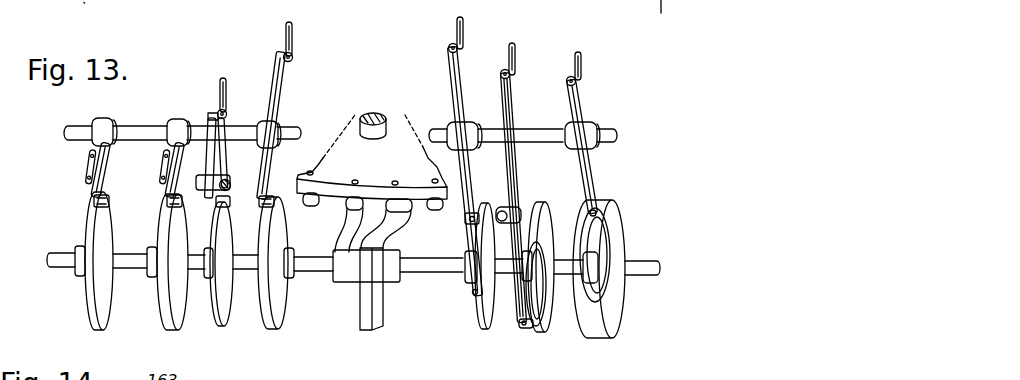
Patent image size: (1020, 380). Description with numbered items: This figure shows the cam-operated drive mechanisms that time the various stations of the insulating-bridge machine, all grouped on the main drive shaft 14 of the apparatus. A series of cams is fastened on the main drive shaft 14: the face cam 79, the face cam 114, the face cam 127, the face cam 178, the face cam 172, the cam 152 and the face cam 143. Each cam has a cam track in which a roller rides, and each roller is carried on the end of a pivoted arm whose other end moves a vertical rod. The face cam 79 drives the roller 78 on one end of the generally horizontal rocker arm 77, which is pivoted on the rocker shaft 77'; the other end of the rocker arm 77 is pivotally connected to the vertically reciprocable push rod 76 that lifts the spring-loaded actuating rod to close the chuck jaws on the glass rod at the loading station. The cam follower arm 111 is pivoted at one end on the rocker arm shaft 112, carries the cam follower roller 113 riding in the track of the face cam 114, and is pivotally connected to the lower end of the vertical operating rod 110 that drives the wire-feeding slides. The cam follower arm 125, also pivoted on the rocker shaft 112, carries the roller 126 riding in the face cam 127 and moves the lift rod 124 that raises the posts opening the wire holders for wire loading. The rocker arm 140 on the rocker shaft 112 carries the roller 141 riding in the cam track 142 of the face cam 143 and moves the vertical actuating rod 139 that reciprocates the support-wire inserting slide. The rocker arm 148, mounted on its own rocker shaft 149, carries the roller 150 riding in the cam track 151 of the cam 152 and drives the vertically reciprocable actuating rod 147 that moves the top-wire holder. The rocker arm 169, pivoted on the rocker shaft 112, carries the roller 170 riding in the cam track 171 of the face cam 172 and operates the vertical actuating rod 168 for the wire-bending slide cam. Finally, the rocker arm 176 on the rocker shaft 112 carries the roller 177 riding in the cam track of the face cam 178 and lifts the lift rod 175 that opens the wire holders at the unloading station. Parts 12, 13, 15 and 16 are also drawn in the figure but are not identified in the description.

The cam 12 is at (370, 113).
The bracket plate 13 is at (378, 332).
The main drive shaft 14 is at (422, 270).
The mounting bosses 15 is at (311, 207).
The platform 16 is at (345, 147).
The push rod 76 is at (229, 93).
The rocker arm 77 is at (201, 145).
The rocker shaft 77' is at (234, 153).
The roller 78 is at (240, 182).
The face cam 79 is at (233, 322).
The vertical operating rod 110 is at (92, 158).
The cam follower arm 111 is at (95, 141).
The rocker arm shaft 112 is at (605, 143).
The cam follower roller 113 is at (98, 216).
The face cam 114 is at (90, 306).
The lift rod 124 is at (166, 163).
The cam follower arm 125 is at (168, 143).
The roller 126 is at (171, 216).
The face cam 127 is at (178, 326).
The vertical actuating rod 139 is at (582, 63).
The rocker arm 140 is at (582, 107).
The roller 141 is at (605, 227).
The cam track 142 is at (608, 250).
The face cam 143 is at (611, 315).
The actuating rod 147 is at (516, 52).
The rocker arm 148 is at (511, 110).
The rocker shaft 149 is at (510, 207).
The roller 150 is at (522, 329).
The cam track 151 is at (540, 285).
The cam 152 is at (538, 334).
The vertical actuating rod 168 is at (456, 28).
The rocker arm 169 is at (458, 103).
The roller 170 is at (469, 228).
The cam track 171 is at (473, 297).
The face cam 172 is at (480, 328).
The lift rod 175 is at (293, 37).
The rocker arm 176 is at (281, 88).
The roller 177 is at (283, 187).
The face cam 178 is at (282, 306).